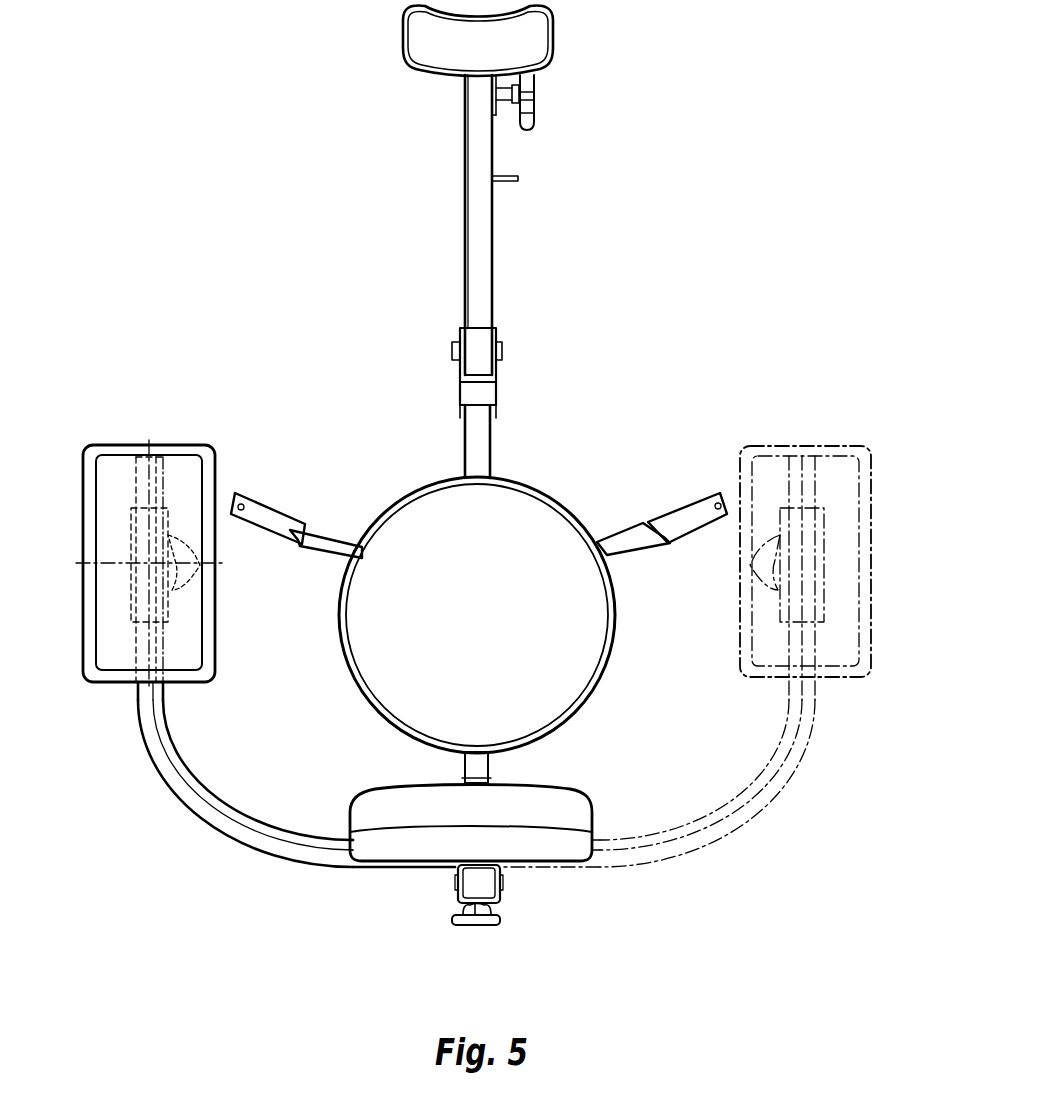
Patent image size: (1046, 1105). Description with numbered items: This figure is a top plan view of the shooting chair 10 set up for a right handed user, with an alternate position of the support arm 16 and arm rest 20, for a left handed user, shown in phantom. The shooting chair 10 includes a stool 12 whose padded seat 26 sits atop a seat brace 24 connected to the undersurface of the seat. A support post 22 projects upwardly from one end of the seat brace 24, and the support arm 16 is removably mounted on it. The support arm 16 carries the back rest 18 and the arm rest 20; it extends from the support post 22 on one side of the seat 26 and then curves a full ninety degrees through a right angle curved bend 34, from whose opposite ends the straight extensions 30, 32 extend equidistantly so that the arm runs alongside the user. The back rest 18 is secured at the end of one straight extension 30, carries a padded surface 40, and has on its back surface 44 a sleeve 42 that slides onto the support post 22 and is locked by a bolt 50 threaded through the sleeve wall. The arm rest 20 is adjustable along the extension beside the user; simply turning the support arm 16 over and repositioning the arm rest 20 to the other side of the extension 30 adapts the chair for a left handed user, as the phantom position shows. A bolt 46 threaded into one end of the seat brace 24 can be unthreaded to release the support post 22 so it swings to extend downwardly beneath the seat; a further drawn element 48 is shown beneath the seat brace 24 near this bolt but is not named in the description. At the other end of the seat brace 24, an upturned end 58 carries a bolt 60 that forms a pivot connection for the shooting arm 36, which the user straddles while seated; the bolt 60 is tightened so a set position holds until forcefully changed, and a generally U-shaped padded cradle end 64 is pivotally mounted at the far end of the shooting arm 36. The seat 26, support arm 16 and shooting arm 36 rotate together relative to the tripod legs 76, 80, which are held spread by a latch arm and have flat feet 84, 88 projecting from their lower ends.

The shooting chair 10 is at (323, 318).
The stool 12 is at (533, 572).
The support arm 16 is at (152, 815).
The back rest 18 is at (392, 892).
The arm rest 20 is at (82, 506).
The support post 22 is at (506, 928).
The seat brace 24 is at (485, 450).
The seat 26 is at (490, 629).
The straight extension 30 is at (266, 789).
The straight extension 32 is at (312, 845).
The right angle curved bend 34 is at (205, 828).
The shooting arm 36 is at (490, 258).
The padded surface 40 is at (398, 805).
The sleeve 42 is at (500, 905).
The back surface 44 is at (430, 865).
The bolt 46 is at (490, 910).
The pin 48 is at (472, 925).
The bolt 50 is at (480, 762).
The upturned end 58 is at (510, 104).
The bolt 60 is at (533, 108).
The padded cradle end 64 is at (430, 40).
The tripod leg 76 is at (340, 530).
The tripod leg 80 is at (633, 535).
The flat foot 84 is at (270, 495).
The flat foot 88 is at (683, 530).